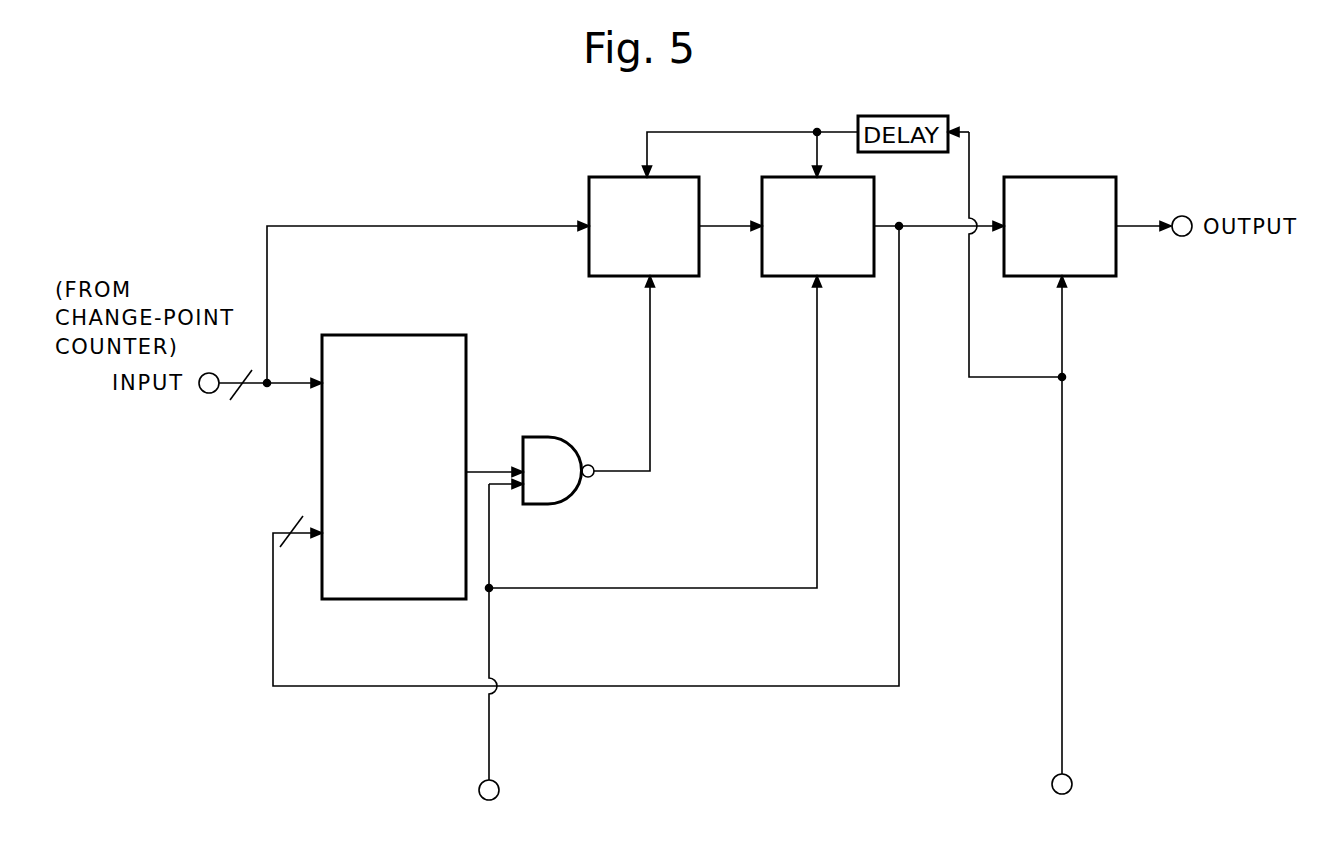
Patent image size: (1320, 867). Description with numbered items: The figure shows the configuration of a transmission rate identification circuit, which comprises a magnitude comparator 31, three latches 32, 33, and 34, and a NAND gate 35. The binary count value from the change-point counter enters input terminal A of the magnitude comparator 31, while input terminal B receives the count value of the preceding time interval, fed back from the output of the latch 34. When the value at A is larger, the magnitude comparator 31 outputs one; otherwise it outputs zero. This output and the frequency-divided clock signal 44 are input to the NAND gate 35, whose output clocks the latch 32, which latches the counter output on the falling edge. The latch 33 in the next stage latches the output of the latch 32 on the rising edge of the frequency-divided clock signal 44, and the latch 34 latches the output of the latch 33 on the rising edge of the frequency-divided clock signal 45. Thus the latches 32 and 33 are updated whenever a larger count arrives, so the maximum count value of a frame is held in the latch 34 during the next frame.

The magnitude comparator 31 is at (466, 360).
The latch 32 is at (627, 177).
The latch 33 is at (874, 193).
The latch 34 is at (1116, 193).
The NAND gate 35 is at (578, 445).
The frequency-divided clock signal 44 is at (561, 559).
The frequency-divided clock signal 45 is at (1043, 555).